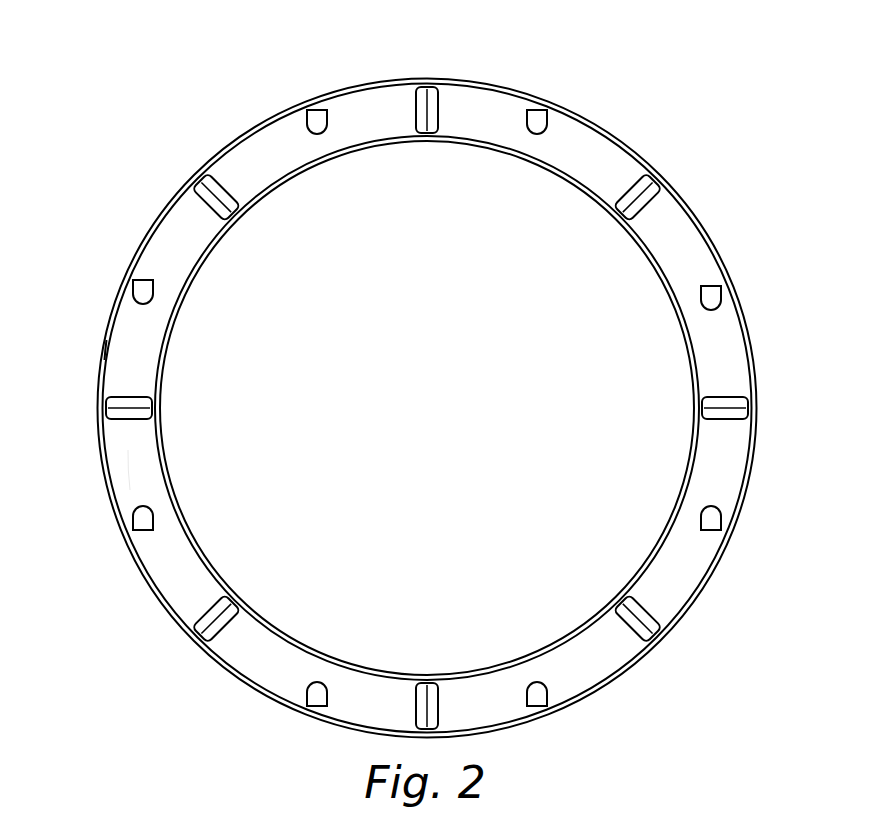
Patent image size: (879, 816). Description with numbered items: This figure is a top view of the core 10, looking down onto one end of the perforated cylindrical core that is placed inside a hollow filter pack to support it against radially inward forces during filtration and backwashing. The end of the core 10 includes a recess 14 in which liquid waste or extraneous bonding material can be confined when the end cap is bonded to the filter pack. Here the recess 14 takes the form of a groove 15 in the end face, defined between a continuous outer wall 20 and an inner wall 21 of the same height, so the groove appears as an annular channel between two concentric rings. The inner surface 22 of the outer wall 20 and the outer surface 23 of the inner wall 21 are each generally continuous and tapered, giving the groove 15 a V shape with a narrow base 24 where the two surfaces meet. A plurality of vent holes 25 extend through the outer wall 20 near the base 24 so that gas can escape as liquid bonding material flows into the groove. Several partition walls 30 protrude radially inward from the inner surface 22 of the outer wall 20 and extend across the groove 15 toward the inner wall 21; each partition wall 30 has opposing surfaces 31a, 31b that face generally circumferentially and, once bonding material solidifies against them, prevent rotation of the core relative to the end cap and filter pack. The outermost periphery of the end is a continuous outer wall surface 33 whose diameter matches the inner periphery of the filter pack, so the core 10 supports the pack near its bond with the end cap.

The core 10 is at (629, 130).
The recess 14 is at (781, 364).
The groove 15 is at (722, 390).
The outer wall 20 is at (124, 297).
The inner wall 21 is at (204, 260).
The inner surface of the outer wall 22 is at (116, 363).
The outer surface of the inner wall 23 is at (150, 335).
The base 24 is at (136, 474).
The vent holes 25 is at (716, 290).
The partition walls 30 is at (425, 140).
The opposing surface 31a is at (413, 98).
The opposing surface 31b is at (441, 98).
The continuous outer wall surface 33 is at (233, 130).